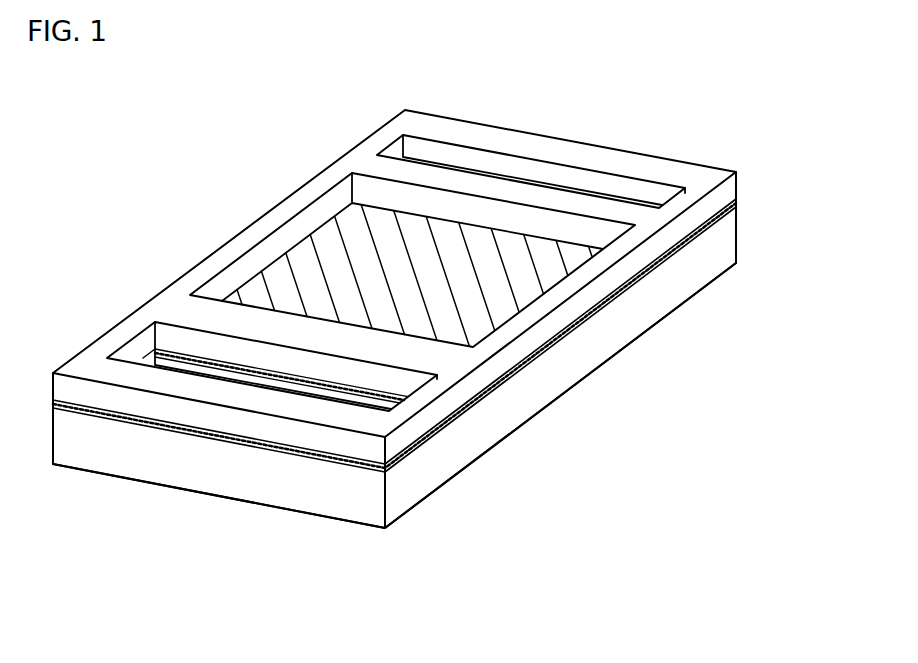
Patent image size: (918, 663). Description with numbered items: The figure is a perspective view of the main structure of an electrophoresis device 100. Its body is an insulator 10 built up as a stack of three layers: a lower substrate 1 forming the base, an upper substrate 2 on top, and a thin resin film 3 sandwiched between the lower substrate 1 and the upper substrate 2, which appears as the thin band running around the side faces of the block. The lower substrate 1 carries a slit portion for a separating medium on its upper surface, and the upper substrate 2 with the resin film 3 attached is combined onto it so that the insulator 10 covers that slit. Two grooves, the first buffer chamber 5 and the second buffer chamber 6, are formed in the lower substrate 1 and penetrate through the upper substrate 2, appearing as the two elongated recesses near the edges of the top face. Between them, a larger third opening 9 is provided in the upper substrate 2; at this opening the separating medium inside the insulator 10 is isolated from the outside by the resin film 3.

The electrophoresis device 100 is at (643, 403).
The insulator 10 is at (441, 319).
The lower substrate 1 is at (415, 377).
The upper substrate 2 is at (737, 184).
The resin film 3 is at (737, 206).
The first buffer chamber 5 is at (127, 352).
The second buffer chamber 6 is at (398, 148).
The third opening 9 is at (298, 226).